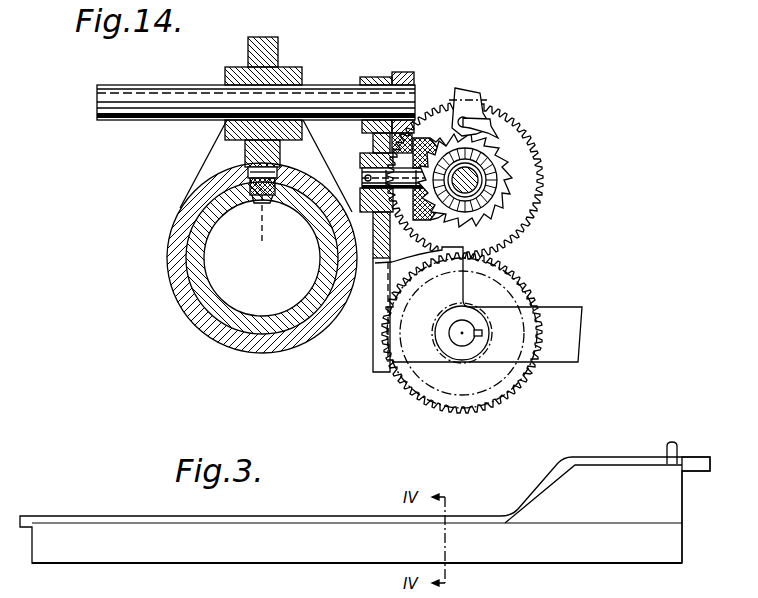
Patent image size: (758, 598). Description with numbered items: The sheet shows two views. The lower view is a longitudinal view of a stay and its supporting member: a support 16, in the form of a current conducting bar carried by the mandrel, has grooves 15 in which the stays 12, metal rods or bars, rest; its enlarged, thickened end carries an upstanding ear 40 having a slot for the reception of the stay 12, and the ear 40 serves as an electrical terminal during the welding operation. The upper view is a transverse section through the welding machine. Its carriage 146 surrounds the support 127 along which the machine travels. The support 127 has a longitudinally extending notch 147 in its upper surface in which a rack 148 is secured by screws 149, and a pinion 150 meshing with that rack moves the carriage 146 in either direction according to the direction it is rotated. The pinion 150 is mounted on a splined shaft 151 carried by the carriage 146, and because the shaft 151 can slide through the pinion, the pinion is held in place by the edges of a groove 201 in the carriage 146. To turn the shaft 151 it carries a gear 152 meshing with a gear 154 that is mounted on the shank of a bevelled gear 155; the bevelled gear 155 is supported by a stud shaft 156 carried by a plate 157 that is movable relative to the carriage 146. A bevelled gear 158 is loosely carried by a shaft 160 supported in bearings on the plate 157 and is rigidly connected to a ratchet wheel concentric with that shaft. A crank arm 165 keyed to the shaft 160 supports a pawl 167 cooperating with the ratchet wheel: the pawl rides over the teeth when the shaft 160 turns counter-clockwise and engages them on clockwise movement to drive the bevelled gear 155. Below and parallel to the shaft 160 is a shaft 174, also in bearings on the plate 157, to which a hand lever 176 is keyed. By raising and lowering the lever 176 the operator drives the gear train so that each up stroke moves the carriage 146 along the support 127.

In FIG. 14, the splined shaft 151 is at (97, 96).
In FIG. 14, the pinion 150 is at (280, 52).
In FIG. 14, the groove 201 is at (245, 163).
In FIG. 14, the notch 147 is at (276, 192).
In FIG. 14, the rack 148 is at (256, 197).
In FIG. 14, the screws 149 is at (258, 228).
In FIG. 14, the carriage 146 is at (178, 212).
In FIG. 14, the support 127 is at (195, 273).
In FIG. 14, the plate 157 is at (373, 77).
In FIG. 14, the gear 152 is at (405, 72).
In FIG. 14, the bevelled gear 155 is at (366, 156).
In FIG. 14, the stud shaft 156 is at (370, 175).
In FIG. 14, the gear 154 is at (405, 134).
In FIG. 14, the bevelled gear 158 is at (500, 166).
In FIG. 14, the shaft 160 is at (482, 189).
In FIG. 14, the crank arm 165 is at (475, 97).
In FIG. 14, the pawl 167 is at (491, 121).
In FIG. 14, the shaft 174 is at (452, 328).
In FIG. 14, the hand lever 176 is at (574, 339).
In FIG. 3, the current conducting bar 16 is at (363, 528).
In FIG. 3, the ear 40 is at (677, 445).
In FIG. 3, the stay 12 is at (711, 462).
In FIG. 3, the groove 15 is at (690, 472).